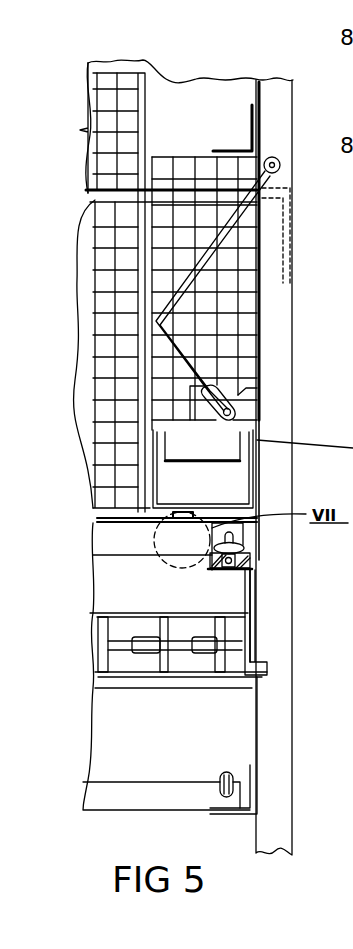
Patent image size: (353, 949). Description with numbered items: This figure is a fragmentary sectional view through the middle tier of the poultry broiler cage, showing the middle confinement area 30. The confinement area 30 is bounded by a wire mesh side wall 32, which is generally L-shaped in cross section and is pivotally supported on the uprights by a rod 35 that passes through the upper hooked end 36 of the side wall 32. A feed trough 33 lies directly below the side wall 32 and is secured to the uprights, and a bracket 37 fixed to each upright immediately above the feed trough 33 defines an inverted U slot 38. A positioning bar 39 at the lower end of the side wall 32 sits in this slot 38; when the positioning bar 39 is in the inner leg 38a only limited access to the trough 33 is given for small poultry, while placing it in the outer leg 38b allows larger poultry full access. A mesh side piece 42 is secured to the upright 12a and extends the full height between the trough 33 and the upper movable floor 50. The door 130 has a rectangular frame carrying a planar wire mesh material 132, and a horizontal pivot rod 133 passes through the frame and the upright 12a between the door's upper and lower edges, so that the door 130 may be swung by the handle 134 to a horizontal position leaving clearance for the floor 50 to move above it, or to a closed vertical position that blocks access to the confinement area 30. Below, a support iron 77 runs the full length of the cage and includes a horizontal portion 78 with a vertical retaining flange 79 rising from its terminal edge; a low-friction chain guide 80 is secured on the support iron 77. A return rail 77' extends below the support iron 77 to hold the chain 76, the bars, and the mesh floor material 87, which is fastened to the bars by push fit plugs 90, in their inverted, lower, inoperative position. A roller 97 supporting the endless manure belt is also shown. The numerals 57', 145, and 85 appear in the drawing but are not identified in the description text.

The middle confinement area 30 is at (300, 320).
The upright 12a is at (282, 347).
The flange 57' is at (300, 334).
The upper movable floor 50 is at (259, 110).
The handle 134 is at (305, 245).
The door 130 is at (147, 124).
The wire mesh material 132 is at (110, 100).
The pivot rod 133 is at (160, 192).
The lower grid 145 is at (75, 245).
The mesh side piece 42 is at (220, 350).
The rod 35 is at (280, 163).
The upper hooked end 36 is at (274, 172).
The side wall 32 is at (207, 260).
The inner leg 38a is at (200, 400).
The inverted U slot 38 is at (232, 398).
The positioning bar 39 is at (237, 413).
The bracket 37 is at (245, 388).
The outer leg 38b is at (220, 405).
The feed trough 33 is at (233, 487).
The floor material 87 is at (95, 515).
The vertical retaining flange 79 is at (217, 562).
The chain 76 is at (242, 545).
The push fit plug 90 is at (252, 560).
The chain guide 80 is at (250, 570).
The support iron 77 is at (280, 663).
The horizontal portion 78 is at (218, 573).
The roller 97 is at (222, 650).
The return rail 77' is at (195, 813).
The member 85 is at (343, 97).